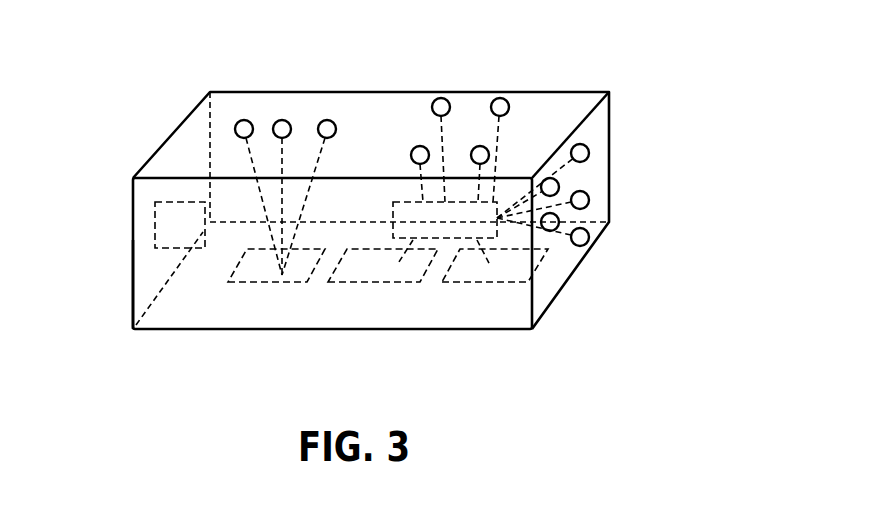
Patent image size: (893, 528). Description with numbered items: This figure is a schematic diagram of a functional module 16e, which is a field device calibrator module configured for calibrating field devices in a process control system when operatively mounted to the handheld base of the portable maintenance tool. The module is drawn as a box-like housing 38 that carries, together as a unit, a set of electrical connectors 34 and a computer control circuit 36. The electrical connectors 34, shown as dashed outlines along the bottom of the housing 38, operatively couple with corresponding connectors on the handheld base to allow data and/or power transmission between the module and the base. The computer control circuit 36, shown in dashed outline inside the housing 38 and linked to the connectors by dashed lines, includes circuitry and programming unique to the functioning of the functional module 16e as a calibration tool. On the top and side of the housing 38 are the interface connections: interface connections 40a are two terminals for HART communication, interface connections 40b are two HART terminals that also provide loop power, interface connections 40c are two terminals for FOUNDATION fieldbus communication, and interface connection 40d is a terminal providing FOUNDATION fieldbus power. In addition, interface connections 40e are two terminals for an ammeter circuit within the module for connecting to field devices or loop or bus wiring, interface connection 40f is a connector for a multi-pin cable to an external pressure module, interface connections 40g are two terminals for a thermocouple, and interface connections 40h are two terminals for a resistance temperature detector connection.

The functional module 16e is at (615, 138).
The electrical connectors 34 is at (273, 283).
The computer control circuit 36 is at (155, 213).
The housing 38 is at (132, 289).
The interface connections 40a is at (242, 119).
The interface connections 40b is at (281, 119).
The interface connections 40c is at (329, 119).
The interface connection 40d is at (420, 146).
The interface connections 40e is at (480, 146).
The interface connection 40f is at (583, 245).
The interface connections 40g is at (560, 221).
The interface connections 40h is at (560, 186).